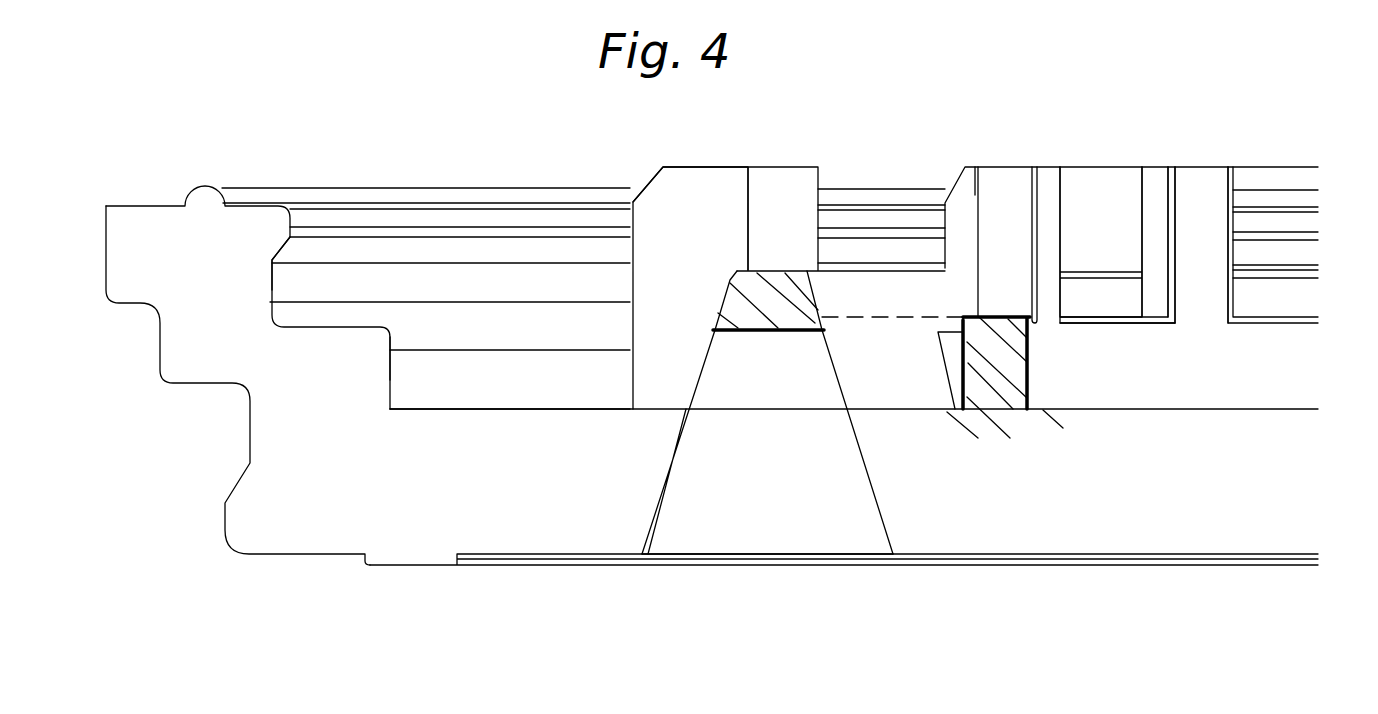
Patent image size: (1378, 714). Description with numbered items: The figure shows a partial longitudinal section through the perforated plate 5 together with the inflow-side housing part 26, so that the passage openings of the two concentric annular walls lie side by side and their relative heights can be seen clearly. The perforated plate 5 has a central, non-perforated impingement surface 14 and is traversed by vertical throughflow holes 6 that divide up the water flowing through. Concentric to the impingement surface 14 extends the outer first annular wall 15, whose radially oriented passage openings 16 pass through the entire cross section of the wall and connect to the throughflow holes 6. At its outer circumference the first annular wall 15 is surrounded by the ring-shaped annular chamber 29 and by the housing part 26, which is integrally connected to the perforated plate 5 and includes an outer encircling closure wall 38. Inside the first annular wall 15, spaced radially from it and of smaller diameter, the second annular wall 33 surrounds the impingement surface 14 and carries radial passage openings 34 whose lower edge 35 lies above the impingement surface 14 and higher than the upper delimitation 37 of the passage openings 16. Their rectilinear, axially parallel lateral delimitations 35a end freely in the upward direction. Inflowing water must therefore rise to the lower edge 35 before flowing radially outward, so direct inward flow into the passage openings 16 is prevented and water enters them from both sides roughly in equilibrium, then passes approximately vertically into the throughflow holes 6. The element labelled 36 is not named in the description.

The perforated plate 5 is at (1050, 508).
The throughflow holes 6 is at (718, 493).
The impingement surface 14 is at (1185, 404).
The first annular wall 15 is at (777, 297).
The passage openings 16 is at (753, 380).
The inflow-side housing part 26 is at (204, 305).
The annular chamber 29 is at (470, 409).
The second annular wall 33 is at (988, 365).
The passage openings 34 is at (1132, 243).
The lower edge 35 is at (992, 310).
The lateral delimitations 35a is at (1200, 213).
The holding block 36 is at (720, 187).
The upper delimitation 37 is at (787, 333).
The closure wall 38 is at (392, 380).